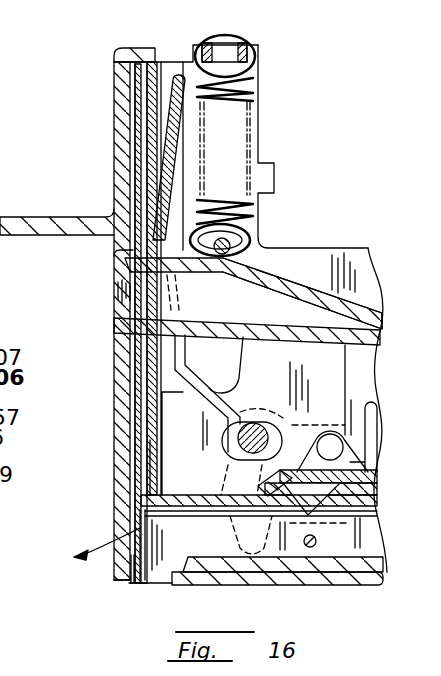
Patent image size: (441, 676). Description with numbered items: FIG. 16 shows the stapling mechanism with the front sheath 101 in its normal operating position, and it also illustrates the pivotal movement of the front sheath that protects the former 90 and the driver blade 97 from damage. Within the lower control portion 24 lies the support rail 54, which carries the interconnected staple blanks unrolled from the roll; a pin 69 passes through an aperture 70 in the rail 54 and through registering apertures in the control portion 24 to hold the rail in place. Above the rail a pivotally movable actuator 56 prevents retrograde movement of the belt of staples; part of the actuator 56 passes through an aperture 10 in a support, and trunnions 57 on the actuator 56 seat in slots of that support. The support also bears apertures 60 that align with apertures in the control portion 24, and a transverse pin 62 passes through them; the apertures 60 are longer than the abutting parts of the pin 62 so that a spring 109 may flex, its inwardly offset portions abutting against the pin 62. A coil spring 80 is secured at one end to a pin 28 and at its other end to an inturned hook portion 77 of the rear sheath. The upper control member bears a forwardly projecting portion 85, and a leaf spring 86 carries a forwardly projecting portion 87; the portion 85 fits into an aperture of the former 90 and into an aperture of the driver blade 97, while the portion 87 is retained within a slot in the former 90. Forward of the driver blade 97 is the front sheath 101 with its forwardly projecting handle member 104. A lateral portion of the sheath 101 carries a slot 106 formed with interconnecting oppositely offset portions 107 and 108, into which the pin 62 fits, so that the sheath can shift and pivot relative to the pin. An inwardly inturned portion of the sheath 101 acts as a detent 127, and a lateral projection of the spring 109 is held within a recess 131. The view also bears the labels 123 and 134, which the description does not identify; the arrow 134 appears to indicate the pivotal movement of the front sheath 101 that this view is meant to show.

The aperture 10 is at (373, 494).
The lower control portion 24 is at (345, 582).
The pin 28 is at (235, 254).
The support rail 54 is at (376, 556).
The actuator 56 is at (353, 462).
The trunnions 57 is at (343, 446).
The apertures 60 is at (233, 438).
The transverse pin 62 is at (247, 426).
The pin 69 is at (260, 590).
The aperture 70 is at (316, 541).
The inturned hook portion 77 is at (228, 53).
The coil spring 80 is at (245, 97).
The forwardly projecting portion 85 is at (142, 303).
The leaf spring 86 is at (382, 310).
The forwardly projecting portion 87 is at (128, 266).
The former 90 is at (138, 405).
The driver blade 97 is at (133, 473).
The front sheath 101 is at (113, 517).
The handle member 104 is at (44, 227).
The slot 106 is at (223, 498).
The offset portion 107 is at (384, 423).
The offset portion 108 is at (355, 527).
The spring 109 is at (180, 360).
The bracket 123 is at (134, 583).
The detent 127 is at (152, 47).
The recess 131 is at (183, 106).
The direction arrow 134 is at (81, 559).